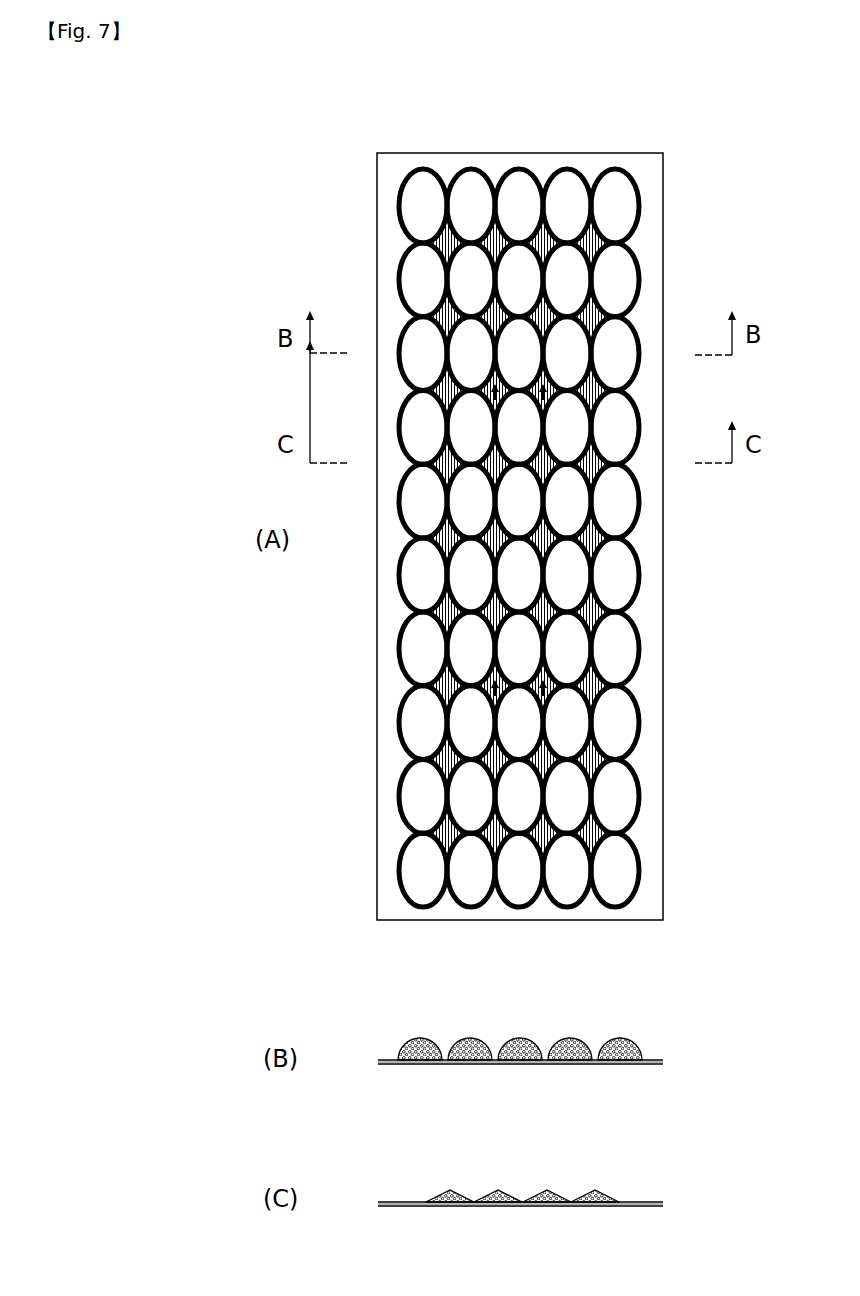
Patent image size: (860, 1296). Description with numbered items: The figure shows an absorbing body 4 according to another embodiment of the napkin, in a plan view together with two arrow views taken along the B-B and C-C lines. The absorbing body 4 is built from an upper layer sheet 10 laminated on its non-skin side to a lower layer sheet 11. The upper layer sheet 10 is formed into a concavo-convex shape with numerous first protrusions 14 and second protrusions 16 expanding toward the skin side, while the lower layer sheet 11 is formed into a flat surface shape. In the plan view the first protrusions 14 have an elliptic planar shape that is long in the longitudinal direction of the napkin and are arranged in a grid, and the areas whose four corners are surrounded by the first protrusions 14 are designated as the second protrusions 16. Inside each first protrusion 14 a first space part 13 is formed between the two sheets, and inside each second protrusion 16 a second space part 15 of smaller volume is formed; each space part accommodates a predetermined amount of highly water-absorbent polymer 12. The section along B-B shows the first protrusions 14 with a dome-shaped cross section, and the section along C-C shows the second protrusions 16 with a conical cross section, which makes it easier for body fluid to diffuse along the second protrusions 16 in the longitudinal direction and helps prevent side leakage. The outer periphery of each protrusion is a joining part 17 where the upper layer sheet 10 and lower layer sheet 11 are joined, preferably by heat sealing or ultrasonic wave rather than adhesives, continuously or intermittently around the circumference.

The absorbing body 4 is at (690, 246).
The upper layer sheet 10 is at (625, 1040).
The lower layer sheet 11 is at (643, 1065).
The highly water-absorbent polymer 12 is at (563, 1064).
The first space part 13 is at (512, 1040).
The first protrusion 14 is at (618, 585).
The second space part 15 is at (505, 1196).
The second protrusion 16 is at (632, 700).
The joining part 17 is at (638, 500).